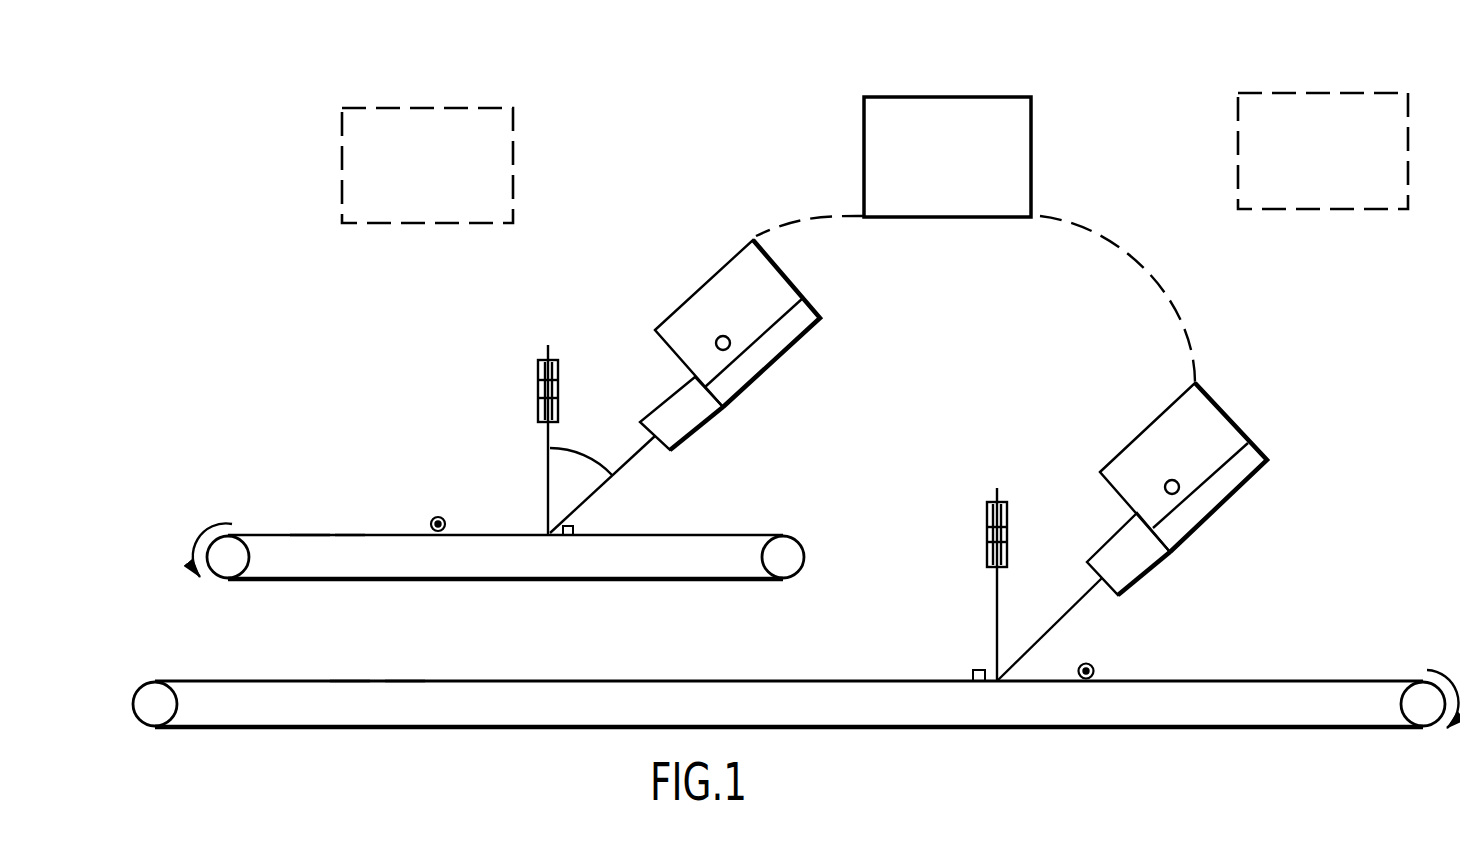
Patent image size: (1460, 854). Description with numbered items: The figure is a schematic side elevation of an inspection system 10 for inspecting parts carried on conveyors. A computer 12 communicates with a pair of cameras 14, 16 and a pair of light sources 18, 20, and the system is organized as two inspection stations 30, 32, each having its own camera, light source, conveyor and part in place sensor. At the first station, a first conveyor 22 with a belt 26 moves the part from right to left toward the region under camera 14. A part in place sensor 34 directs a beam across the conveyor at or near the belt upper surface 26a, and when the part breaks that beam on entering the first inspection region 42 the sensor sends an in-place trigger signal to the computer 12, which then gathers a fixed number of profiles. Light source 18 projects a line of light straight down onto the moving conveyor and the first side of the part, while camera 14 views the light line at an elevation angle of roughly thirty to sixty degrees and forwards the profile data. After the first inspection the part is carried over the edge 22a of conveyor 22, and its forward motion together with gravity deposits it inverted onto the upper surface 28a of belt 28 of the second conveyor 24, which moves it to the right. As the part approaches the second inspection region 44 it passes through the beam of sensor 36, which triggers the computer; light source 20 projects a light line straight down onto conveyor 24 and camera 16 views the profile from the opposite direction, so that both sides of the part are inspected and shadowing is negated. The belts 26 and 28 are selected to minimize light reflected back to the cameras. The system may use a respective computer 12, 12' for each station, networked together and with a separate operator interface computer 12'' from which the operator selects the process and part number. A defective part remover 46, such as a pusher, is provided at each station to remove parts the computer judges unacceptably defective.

The inspection system 10 is at (1112, 108).
The computer 12 is at (895, 143).
The computer 12' is at (1283, 151).
The operator interface computer 12'' is at (465, 134).
The camera 14 is at (770, 297).
The camera 16 is at (1152, 438).
The light source 18 is at (560, 332).
The light source 20 is at (1000, 472).
The first conveyor 22 is at (718, 531).
The edge of conveyor 22a is at (230, 583).
The second conveyor 24 is at (652, 672).
The belt 26 is at (307, 533).
The conveyor belt upper surface 26a is at (347, 533).
The belt 28 is at (350, 681).
The conveyor belt upper surface 28a is at (405, 681).
The inspection station 30 is at (776, 425).
The inspection station 32 is at (1306, 551).
The part in place sensor 34 is at (575, 527).
The part in place sensor 36 is at (978, 668).
The first inspection region 42 is at (547, 545).
The second inspection region 44 is at (994, 690).
The defective part remover 46 is at (440, 505).